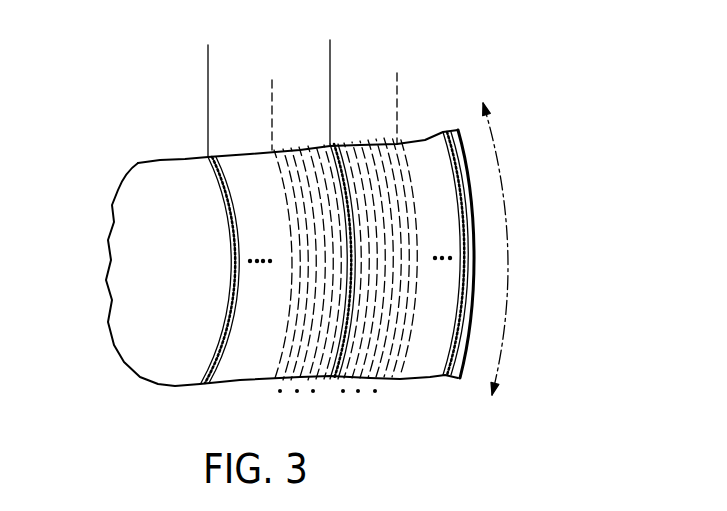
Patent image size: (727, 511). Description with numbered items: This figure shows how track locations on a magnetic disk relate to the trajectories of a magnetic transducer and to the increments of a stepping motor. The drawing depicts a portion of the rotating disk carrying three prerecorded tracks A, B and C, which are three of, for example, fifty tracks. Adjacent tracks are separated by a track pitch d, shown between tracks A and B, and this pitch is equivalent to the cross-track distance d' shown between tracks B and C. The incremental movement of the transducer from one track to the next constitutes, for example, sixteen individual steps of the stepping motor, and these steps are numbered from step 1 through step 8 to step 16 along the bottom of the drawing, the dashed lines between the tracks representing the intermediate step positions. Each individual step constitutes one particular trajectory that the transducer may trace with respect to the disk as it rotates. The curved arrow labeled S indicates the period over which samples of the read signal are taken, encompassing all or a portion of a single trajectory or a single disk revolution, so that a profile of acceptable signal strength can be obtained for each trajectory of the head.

The track A is at (208, 157).
The track B is at (341, 255).
The track C is at (443, 132).
The sampling period S is at (512, 230).
The track pitch d is at (269, 98).
The cross-track distance d' is at (334, 111).
The step 1 is at (280, 275).
The step 8 is at (337, 272).
The step 16 is at (400, 269).